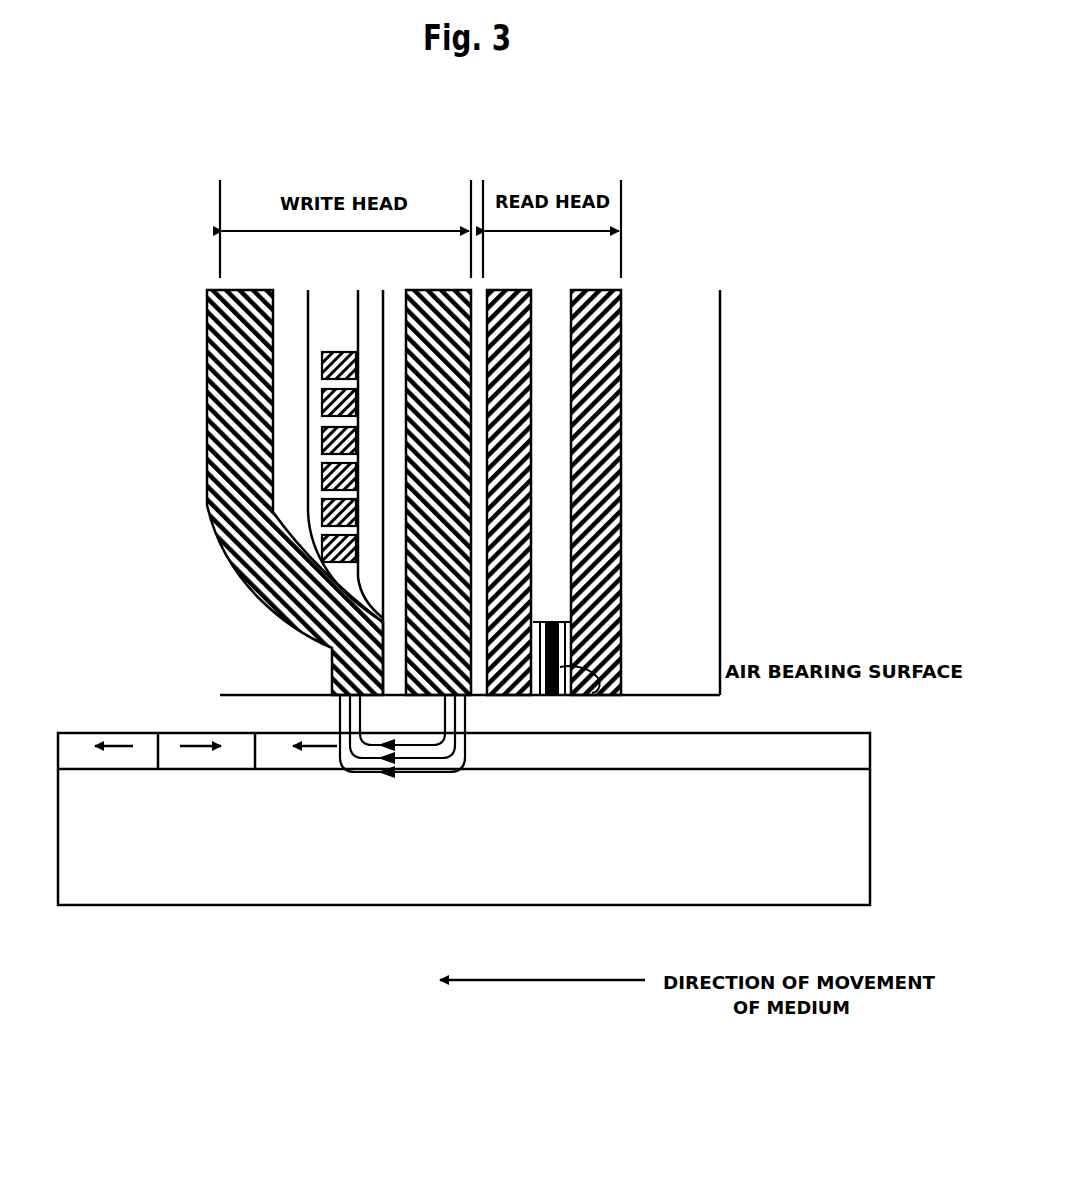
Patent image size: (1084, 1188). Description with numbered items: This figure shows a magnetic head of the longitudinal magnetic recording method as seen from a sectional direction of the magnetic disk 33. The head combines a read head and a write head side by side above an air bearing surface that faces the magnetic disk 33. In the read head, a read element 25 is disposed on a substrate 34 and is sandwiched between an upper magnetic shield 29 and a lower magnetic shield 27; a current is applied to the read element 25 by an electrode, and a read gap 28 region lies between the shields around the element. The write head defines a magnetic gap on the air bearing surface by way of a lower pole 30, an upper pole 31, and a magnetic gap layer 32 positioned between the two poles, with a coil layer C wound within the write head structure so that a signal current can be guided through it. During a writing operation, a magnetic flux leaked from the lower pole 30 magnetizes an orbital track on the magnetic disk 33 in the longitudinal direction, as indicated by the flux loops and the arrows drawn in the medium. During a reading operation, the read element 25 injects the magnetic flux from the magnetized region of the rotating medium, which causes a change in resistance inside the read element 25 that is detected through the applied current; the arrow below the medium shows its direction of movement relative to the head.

The upper pole 31 is at (243, 303).
The coil layer C is at (328, 352).
The magnetic gap layer 32 is at (400, 323).
The lower pole 30 is at (457, 310).
The upper magnetic shield 29 is at (525, 310).
The lower magnetic shield 27 is at (613, 303).
The read gap 28 is at (542, 670).
The read element 25 is at (558, 690).
The substrate 34 is at (590, 690).
The magnetic disk 33 is at (738, 888).